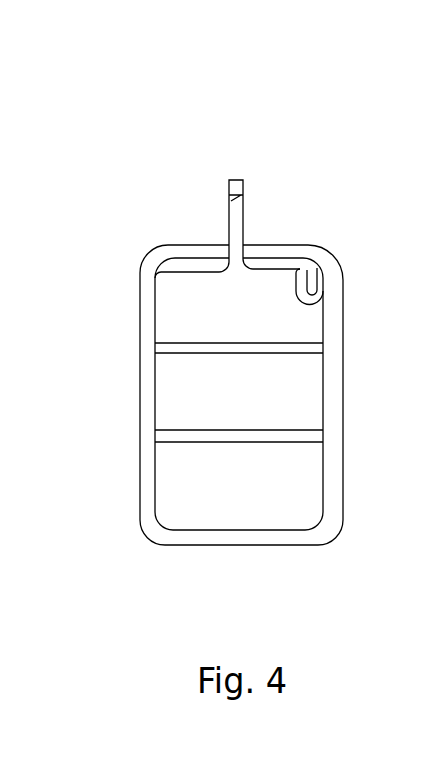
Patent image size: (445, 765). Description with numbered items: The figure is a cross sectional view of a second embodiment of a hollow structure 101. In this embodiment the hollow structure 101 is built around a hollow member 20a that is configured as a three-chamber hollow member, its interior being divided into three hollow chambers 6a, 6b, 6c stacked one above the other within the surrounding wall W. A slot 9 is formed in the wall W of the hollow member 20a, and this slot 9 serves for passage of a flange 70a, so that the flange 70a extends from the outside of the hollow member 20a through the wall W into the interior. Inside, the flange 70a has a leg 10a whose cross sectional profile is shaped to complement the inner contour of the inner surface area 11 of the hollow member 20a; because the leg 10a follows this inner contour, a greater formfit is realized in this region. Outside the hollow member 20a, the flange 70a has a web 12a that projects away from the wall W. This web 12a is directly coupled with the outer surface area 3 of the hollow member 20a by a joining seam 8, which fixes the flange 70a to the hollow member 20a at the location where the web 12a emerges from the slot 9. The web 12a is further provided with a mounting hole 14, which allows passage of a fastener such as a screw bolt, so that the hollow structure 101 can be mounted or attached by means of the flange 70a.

The hollow structure 101 is at (78, 135).
The outer surface area 3 is at (167, 244).
The hollow member 20a is at (150, 303).
The wall W is at (216, 249).
The slot 9 is at (158, 268).
The joining seam 8 is at (226, 239).
The flange 70a is at (228, 215).
The web 12a is at (239, 224).
The mounting hole 14 is at (241, 196).
The leg 10a is at (291, 263).
The inner surface area 11 is at (333, 306).
The hollow chamber 6a is at (257, 324).
The hollow chamber 6b is at (260, 415).
The hollow chamber 6c is at (260, 510).